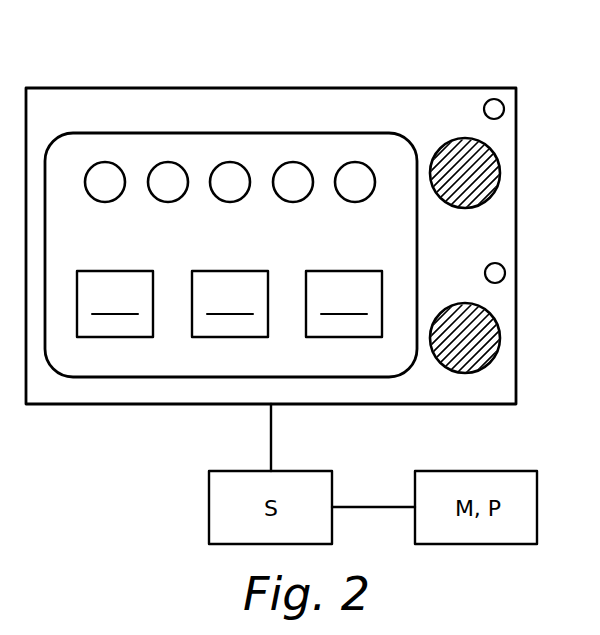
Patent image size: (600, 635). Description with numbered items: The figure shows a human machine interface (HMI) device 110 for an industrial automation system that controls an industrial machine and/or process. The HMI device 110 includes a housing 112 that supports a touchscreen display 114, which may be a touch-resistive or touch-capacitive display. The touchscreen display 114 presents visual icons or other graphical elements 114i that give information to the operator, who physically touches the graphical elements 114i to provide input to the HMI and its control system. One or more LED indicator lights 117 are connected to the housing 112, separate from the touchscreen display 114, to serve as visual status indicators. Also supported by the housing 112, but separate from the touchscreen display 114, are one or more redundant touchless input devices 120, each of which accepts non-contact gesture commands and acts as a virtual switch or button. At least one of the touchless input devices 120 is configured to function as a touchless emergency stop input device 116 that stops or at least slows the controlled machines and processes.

The human machine interface (HMI) device 110 is at (489, 60).
The housing 112 is at (360, 88).
The touchscreen display 114 is at (235, 133).
The graphical elements 114i is at (168, 172).
The touchless emergency stop (Estop) input device 116 is at (507, 182).
The LED indicator lights 117 is at (504, 108).
The touchless input devices 120 is at (507, 257).